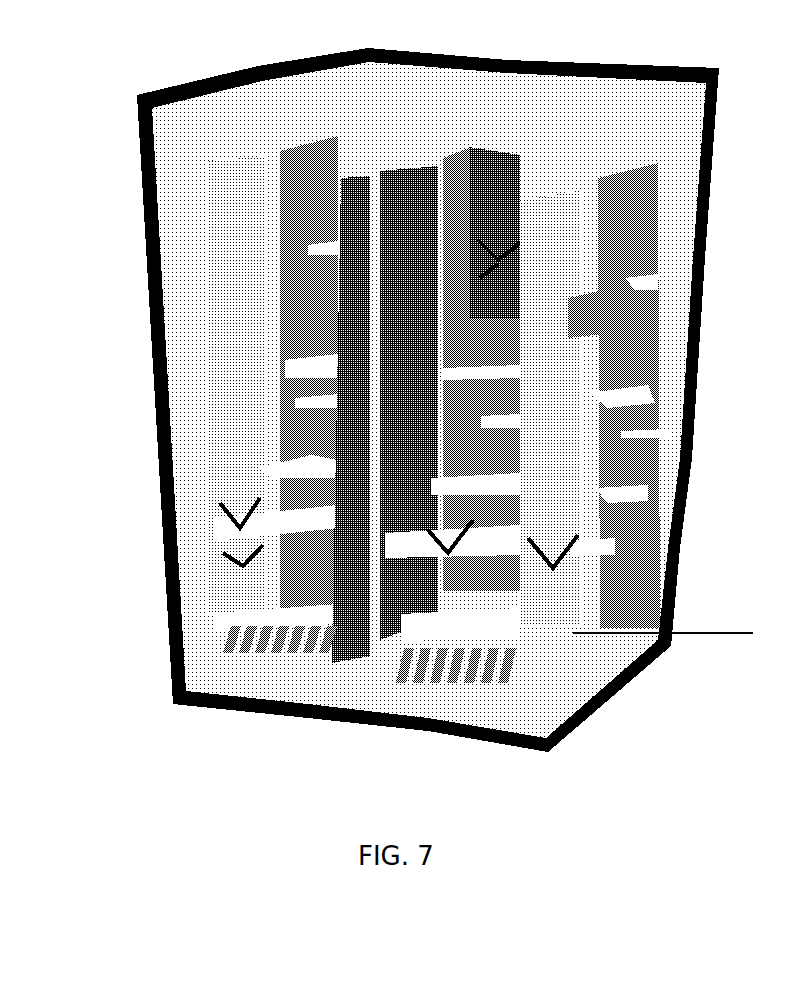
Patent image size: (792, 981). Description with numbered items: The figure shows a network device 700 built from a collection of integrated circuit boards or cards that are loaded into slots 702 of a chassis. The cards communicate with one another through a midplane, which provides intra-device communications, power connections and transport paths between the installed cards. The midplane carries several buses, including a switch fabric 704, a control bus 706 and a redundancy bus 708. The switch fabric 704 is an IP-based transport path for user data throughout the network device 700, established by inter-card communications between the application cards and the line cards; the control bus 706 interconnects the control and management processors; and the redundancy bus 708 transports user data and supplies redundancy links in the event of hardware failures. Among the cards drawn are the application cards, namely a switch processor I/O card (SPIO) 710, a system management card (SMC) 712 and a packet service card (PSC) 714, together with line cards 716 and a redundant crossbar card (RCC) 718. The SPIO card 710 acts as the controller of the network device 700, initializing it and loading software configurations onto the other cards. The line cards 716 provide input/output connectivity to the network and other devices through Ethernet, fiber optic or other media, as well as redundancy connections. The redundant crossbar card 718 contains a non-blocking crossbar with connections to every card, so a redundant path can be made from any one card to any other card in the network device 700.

The network device 700 is at (367, 766).
The slots 702 is at (435, 670).
The switch fabric 704 is at (558, 545).
The control bus 706 is at (608, 490).
The redundancy bus 708 is at (723, 350).
The switch processor I/O card (SPIO) 710 is at (515, 155).
The system management card (SMC) 712 is at (397, 165).
The packet service card (PSC) 714 is at (192, 328).
The line cards 716 is at (623, 155).
The redundant crossbar card (RCC) 718 is at (467, 607).